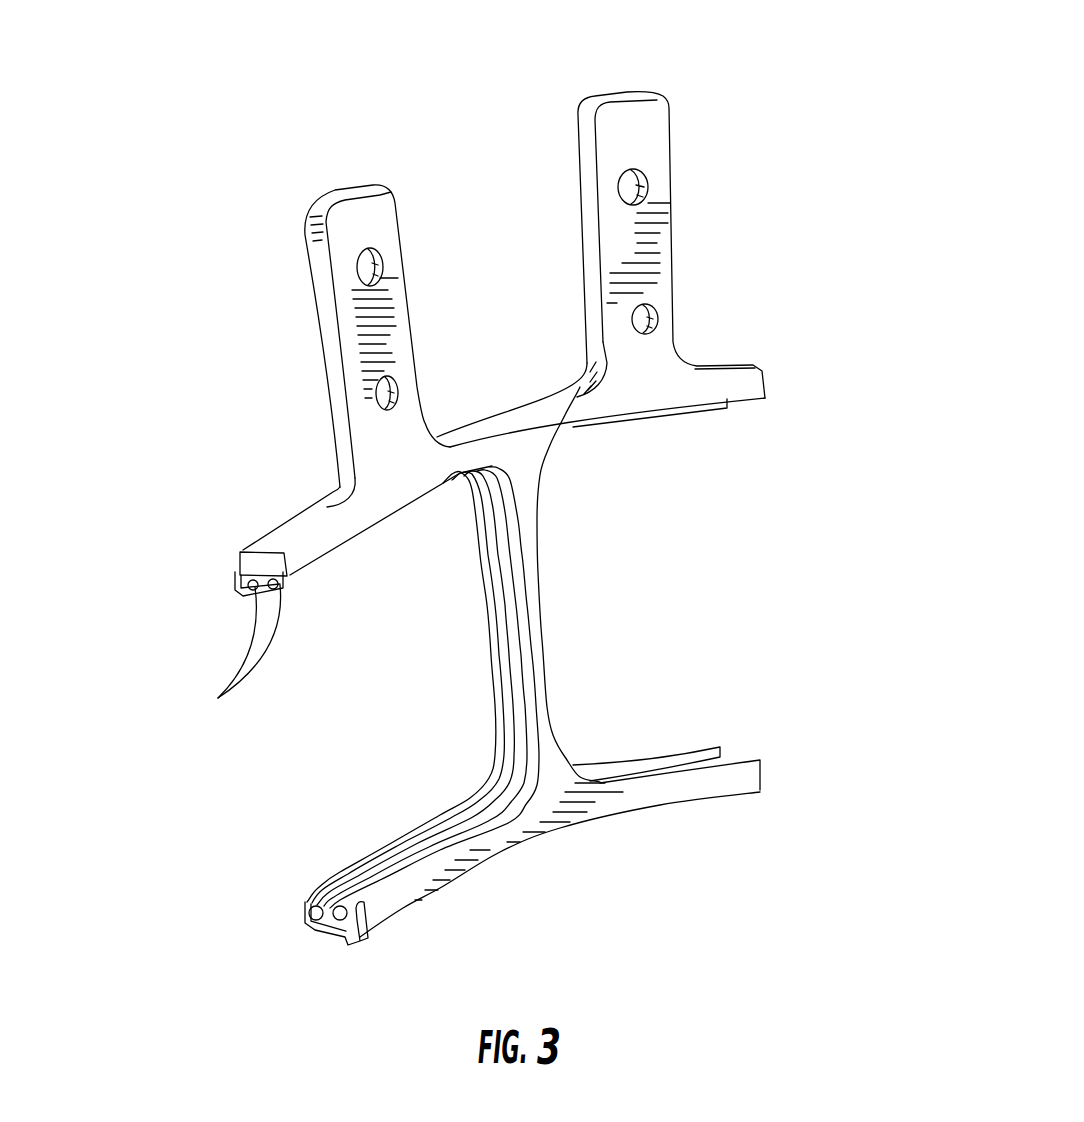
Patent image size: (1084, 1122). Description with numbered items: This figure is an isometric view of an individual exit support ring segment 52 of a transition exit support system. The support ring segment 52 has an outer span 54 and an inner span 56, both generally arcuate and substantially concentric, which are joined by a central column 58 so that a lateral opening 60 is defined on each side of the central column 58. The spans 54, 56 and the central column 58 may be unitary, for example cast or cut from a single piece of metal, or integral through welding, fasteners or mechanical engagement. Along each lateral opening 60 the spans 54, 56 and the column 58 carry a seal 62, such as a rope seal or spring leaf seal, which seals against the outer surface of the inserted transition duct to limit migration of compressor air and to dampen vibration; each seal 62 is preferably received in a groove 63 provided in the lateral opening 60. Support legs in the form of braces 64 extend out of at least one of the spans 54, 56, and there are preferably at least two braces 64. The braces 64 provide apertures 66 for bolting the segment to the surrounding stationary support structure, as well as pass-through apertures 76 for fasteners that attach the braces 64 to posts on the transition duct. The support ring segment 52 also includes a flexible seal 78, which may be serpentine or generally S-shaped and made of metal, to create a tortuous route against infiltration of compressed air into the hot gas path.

The exit support ring segment 52 is at (165, 253).
The outer span 54 is at (755, 382).
The inner span 56 is at (733, 780).
The central column 58 is at (539, 622).
The lateral opening 60 is at (230, 745).
The seal 62 is at (226, 696).
The groove 63 is at (350, 913).
The brace 64 is at (342, 361).
The aperture 66 is at (372, 265).
The pass-through aperture 76 is at (376, 393).
The flexible seal 78 is at (237, 591).